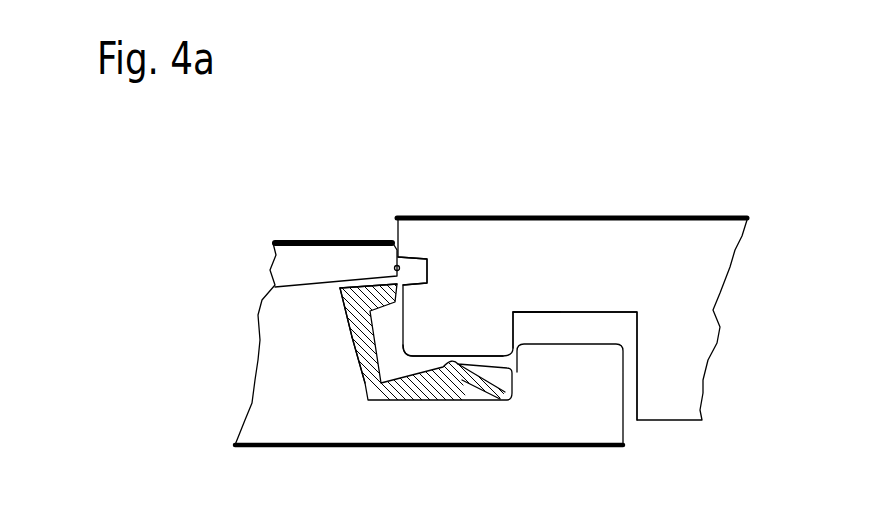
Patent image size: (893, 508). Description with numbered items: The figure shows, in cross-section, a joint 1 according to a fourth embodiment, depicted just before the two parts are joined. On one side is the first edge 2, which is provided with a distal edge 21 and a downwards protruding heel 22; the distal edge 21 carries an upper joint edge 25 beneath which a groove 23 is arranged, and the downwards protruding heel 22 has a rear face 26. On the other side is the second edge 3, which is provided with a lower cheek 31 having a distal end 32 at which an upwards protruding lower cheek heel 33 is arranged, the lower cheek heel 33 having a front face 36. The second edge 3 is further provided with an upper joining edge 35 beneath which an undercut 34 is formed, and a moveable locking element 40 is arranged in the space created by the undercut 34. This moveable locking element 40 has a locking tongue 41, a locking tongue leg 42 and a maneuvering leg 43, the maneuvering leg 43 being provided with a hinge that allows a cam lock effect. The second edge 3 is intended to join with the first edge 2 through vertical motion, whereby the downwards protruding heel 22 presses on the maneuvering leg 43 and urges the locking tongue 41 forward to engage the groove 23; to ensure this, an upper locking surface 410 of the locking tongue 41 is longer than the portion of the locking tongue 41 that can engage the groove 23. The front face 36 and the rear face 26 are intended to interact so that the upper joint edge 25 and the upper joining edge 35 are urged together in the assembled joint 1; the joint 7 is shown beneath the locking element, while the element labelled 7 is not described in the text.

The joint 1 is at (415, 100).
The first edge 2 is at (563, 230).
The second edge 3 is at (288, 241).
The joint 7 is at (492, 507).
The distal edge 21 is at (399, 203).
The downwards protruding heel 22 is at (468, 332).
The groove 23 is at (423, 252).
The upper joint edge 25 is at (393, 226).
The rear face 26 is at (580, 363).
The lower cheek 31 is at (490, 400).
The distal end 32 is at (636, 441).
The lower cheek heel 33 is at (605, 311).
The undercut 34 is at (383, 328).
The upper joining edge 35 is at (340, 288).
The front face 36 is at (543, 400).
The moveable locking element 40 is at (372, 385).
The locking tongue 41 is at (342, 303).
The locking tongue leg 42 is at (345, 357).
The maneuvering leg 43 is at (412, 390).
The upper locking surface 410 is at (450, 507).